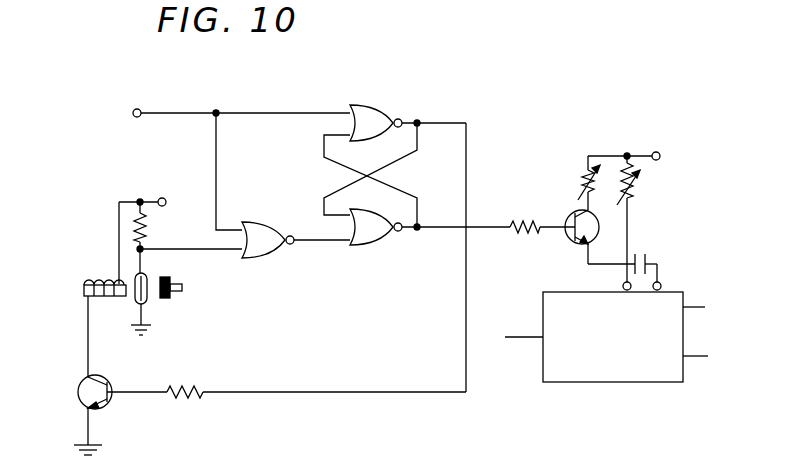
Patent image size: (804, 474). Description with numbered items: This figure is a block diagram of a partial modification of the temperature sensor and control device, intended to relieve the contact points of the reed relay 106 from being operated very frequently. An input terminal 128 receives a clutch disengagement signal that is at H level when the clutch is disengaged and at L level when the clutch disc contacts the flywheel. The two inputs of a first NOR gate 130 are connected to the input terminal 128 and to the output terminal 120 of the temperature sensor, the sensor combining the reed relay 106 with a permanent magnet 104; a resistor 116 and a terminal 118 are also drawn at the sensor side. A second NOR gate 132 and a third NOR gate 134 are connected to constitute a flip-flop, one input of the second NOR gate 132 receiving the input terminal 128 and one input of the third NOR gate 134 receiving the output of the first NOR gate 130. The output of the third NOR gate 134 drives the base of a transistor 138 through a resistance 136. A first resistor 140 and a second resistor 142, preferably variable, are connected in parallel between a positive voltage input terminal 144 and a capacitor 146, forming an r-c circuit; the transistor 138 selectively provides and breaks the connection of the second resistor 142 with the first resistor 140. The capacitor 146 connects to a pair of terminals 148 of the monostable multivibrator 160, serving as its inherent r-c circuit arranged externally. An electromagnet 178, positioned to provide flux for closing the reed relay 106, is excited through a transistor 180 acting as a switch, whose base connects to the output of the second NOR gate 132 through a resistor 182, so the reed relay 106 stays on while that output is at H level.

The input terminal 128 is at (138, 109).
The supply terminal 118 is at (160, 198).
The resistor 116 is at (148, 233).
The output terminal 120 is at (142, 252).
The permanent magnet 104 is at (165, 300).
The reed relay 106 is at (135, 298).
The electromagnet 178 is at (90, 285).
The transistor 180 is at (100, 409).
The resistor 182 is at (185, 404).
The first NOR gate 130 is at (262, 222).
The second NOR gate 132 is at (390, 108).
The third NOR gate 134 is at (368, 246).
The resistance 136 is at (515, 224).
The transistor 138 is at (570, 215).
The second resistor 142 is at (587, 175).
The positive voltage input terminal 144 is at (660, 153).
The first resistor 140 is at (640, 186).
The capacitor 146 is at (650, 260).
The pair of terminals 148 is at (620, 285).
The monostable multivibrator 160 is at (612, 349).